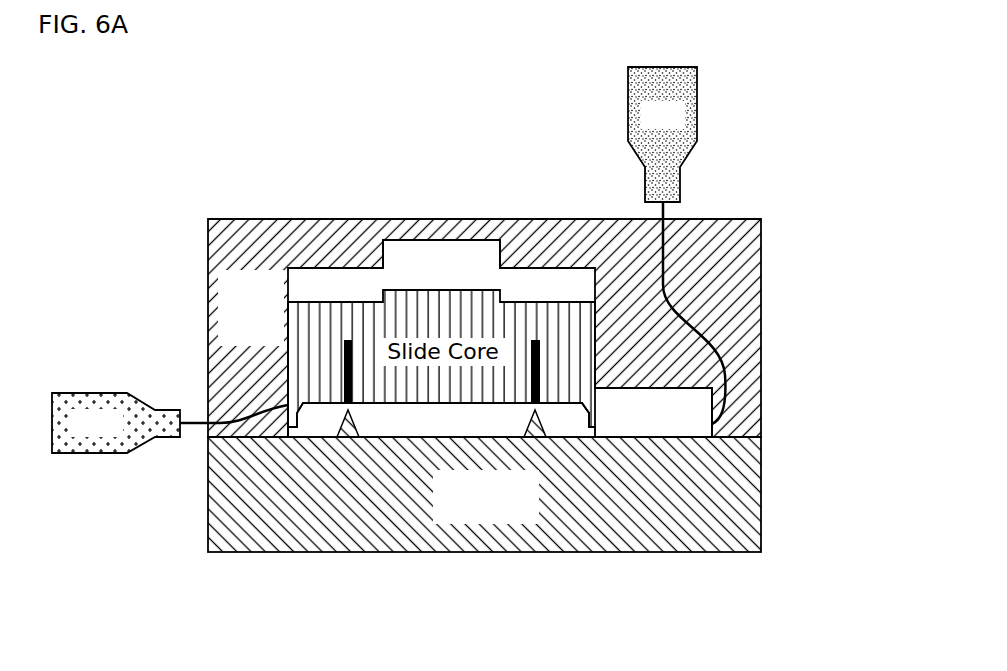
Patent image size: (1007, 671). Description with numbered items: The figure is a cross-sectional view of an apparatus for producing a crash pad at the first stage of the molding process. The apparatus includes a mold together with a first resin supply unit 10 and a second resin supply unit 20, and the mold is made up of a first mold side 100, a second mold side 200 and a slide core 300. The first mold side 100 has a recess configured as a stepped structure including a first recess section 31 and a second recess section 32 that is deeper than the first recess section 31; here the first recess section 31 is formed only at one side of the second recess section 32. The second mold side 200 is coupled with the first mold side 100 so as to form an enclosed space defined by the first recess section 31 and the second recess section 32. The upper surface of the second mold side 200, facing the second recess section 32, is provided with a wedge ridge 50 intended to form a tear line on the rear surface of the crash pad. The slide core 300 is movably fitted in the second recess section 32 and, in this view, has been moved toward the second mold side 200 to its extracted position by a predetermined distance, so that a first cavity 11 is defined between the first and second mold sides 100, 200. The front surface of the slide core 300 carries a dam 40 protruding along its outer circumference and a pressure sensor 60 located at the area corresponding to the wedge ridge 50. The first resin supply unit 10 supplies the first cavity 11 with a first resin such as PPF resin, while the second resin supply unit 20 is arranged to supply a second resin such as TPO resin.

The first mold side 100 is at (247, 238).
The second mold side 200 is at (498, 553).
The first resin supply unit 10 is at (685, 85).
The second resin supply unit 20 is at (98, 400).
The first cavity 11 is at (386, 428).
The first recess section 31 is at (678, 415).
The second recess section 32 is at (438, 253).
The dam 40 is at (590, 425).
The wedge ridge 50 is at (340, 425).
The pressure sensor 60 is at (350, 340).
The slide core 300 is at (538, 335).